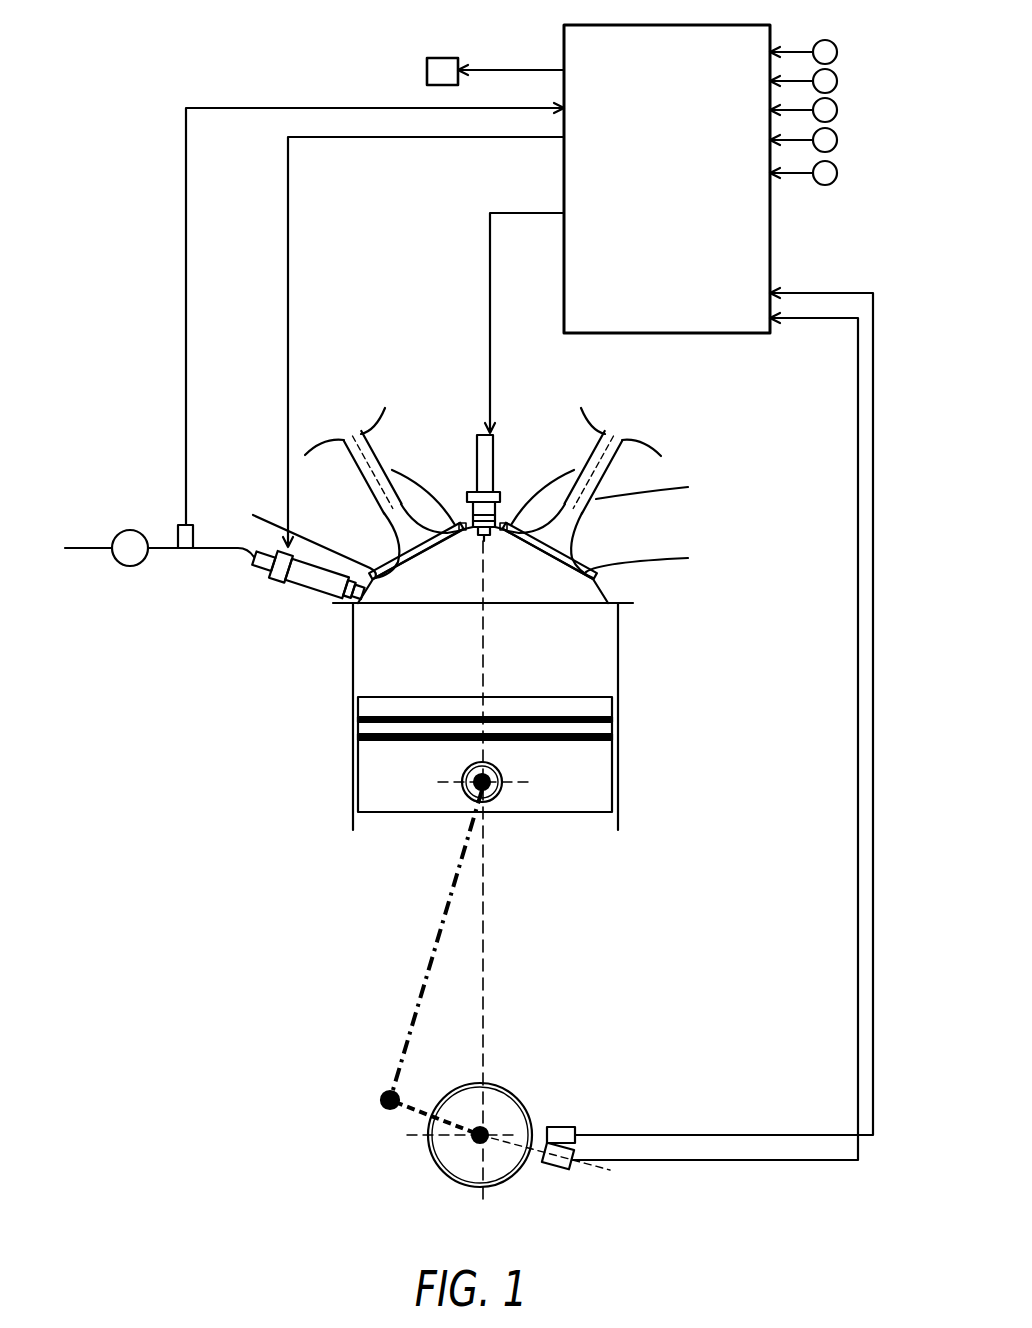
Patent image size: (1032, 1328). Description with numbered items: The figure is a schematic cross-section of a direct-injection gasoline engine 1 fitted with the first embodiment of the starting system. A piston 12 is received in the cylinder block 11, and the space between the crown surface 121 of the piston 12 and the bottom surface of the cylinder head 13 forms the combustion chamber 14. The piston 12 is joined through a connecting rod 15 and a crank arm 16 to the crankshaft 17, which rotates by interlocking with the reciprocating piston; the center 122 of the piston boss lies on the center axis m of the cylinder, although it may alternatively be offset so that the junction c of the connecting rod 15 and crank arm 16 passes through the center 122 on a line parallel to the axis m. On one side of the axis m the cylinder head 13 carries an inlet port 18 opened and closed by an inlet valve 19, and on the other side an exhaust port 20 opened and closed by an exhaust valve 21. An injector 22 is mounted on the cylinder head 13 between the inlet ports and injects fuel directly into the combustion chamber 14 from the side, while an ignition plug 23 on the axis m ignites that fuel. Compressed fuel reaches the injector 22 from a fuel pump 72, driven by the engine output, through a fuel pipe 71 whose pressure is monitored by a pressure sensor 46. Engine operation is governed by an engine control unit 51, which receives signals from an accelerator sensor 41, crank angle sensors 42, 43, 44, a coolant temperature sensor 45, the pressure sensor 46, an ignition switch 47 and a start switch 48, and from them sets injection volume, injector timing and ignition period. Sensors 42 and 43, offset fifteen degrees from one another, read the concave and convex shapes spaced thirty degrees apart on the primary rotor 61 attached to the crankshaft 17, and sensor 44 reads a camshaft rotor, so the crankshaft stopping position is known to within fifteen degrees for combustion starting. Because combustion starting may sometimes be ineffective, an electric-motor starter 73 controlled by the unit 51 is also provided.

The engine 1 is at (689, 452).
The cylinder block 11 is at (500, 716).
The piston 12 is at (619, 773).
The crown surface 121 is at (594, 698).
The center of the piston boss 122 is at (492, 804).
The cylinder head 13 is at (447, 424).
The combustion chamber 14 is at (426, 591).
The connecting rod 15 is at (423, 988).
The crank arm 16 is at (406, 1117).
The crankshaft 17 is at (478, 1138).
The inlet port 18 is at (357, 556).
The inlet valve 19 is at (373, 472).
The exhaust port 20 is at (627, 563).
The exhaust valve 21 is at (602, 490).
The injector 22 is at (300, 586).
The ignition plug 23 is at (491, 463).
The accelerator sensor 41 is at (838, 53).
The crank angle sensor 42 is at (561, 1127).
The crank angle sensor 43 is at (557, 1172).
The crank angle sensor 44 is at (838, 82).
The temperature sensor 45 is at (838, 111).
The pressure sensor 46 is at (178, 527).
The ignition switch 47 is at (838, 141).
The start switch 48 is at (838, 173).
The ECU (electronic control unit) 51 is at (733, 24).
The primary rotor 61 is at (513, 1094).
The fuel pipe 71 is at (217, 550).
The fuel pump 72 is at (120, 530).
The starter 73 is at (443, 57).
The center axis of the cylinder m is at (483, 973).
The junction of the connecting rod and the crank arm c is at (379, 1100).